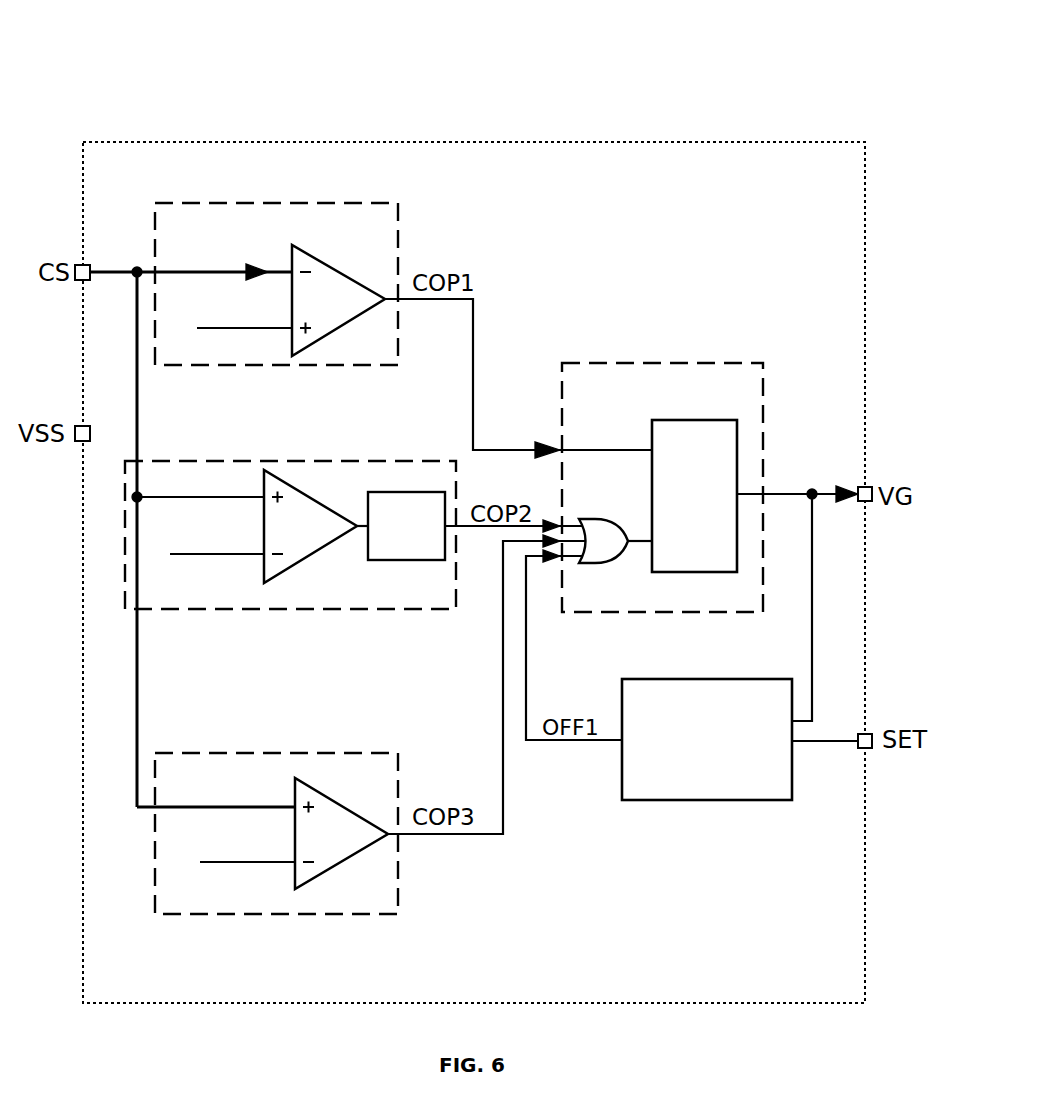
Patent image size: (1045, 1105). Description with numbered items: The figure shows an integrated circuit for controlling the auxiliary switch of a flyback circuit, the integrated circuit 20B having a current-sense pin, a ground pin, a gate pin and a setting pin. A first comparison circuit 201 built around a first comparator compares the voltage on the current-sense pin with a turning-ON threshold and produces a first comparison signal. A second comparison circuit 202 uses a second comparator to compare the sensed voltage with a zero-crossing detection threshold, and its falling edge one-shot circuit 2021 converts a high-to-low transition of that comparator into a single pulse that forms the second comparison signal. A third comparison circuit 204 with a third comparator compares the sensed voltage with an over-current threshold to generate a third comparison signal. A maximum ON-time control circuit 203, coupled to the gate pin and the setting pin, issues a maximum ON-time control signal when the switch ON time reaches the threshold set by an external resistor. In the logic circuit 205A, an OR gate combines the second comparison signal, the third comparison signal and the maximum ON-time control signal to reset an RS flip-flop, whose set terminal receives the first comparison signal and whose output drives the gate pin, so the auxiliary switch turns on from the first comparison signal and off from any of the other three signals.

The integrated circuit 20B is at (622, 46).
The first comparison circuit 201 is at (252, 366).
The second comparison circuit 202 is at (290, 553).
The falling edge one-shot circuit 2021 is at (406, 526).
The maximum ON-time control circuit 203 is at (660, 801).
The third comparison circuit 204 is at (192, 915).
The logic circuit 205A is at (659, 613).